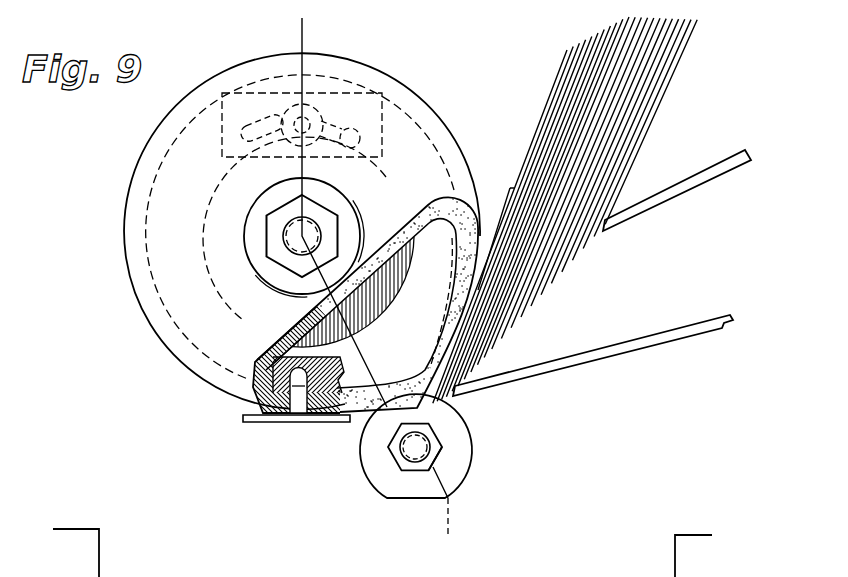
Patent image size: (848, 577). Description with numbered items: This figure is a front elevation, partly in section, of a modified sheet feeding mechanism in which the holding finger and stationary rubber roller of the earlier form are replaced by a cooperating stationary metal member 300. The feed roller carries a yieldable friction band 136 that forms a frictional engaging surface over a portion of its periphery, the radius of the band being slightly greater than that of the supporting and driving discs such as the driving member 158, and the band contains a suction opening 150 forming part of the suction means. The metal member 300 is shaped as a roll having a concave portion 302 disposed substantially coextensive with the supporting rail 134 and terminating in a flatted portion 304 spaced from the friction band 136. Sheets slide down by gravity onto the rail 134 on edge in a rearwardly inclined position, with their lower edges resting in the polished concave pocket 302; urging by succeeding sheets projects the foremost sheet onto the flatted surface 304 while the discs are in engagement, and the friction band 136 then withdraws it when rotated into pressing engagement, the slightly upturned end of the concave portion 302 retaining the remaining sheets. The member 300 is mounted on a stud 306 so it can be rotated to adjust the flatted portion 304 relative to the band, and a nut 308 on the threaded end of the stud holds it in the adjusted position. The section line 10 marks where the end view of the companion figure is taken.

The line 10— 10 is at (320, 28).
The supporting rail 134 is at (560, 359).
The friction band 136 is at (348, 413).
The suction opening 150 is at (300, 421).
The driving member 158 is at (150, 576).
The metal member 300 is at (370, 480).
The concave portion 302 is at (432, 325).
The flatted portion 304 is at (385, 456).
The stud 306 is at (432, 447).
The nut 308 is at (433, 467).